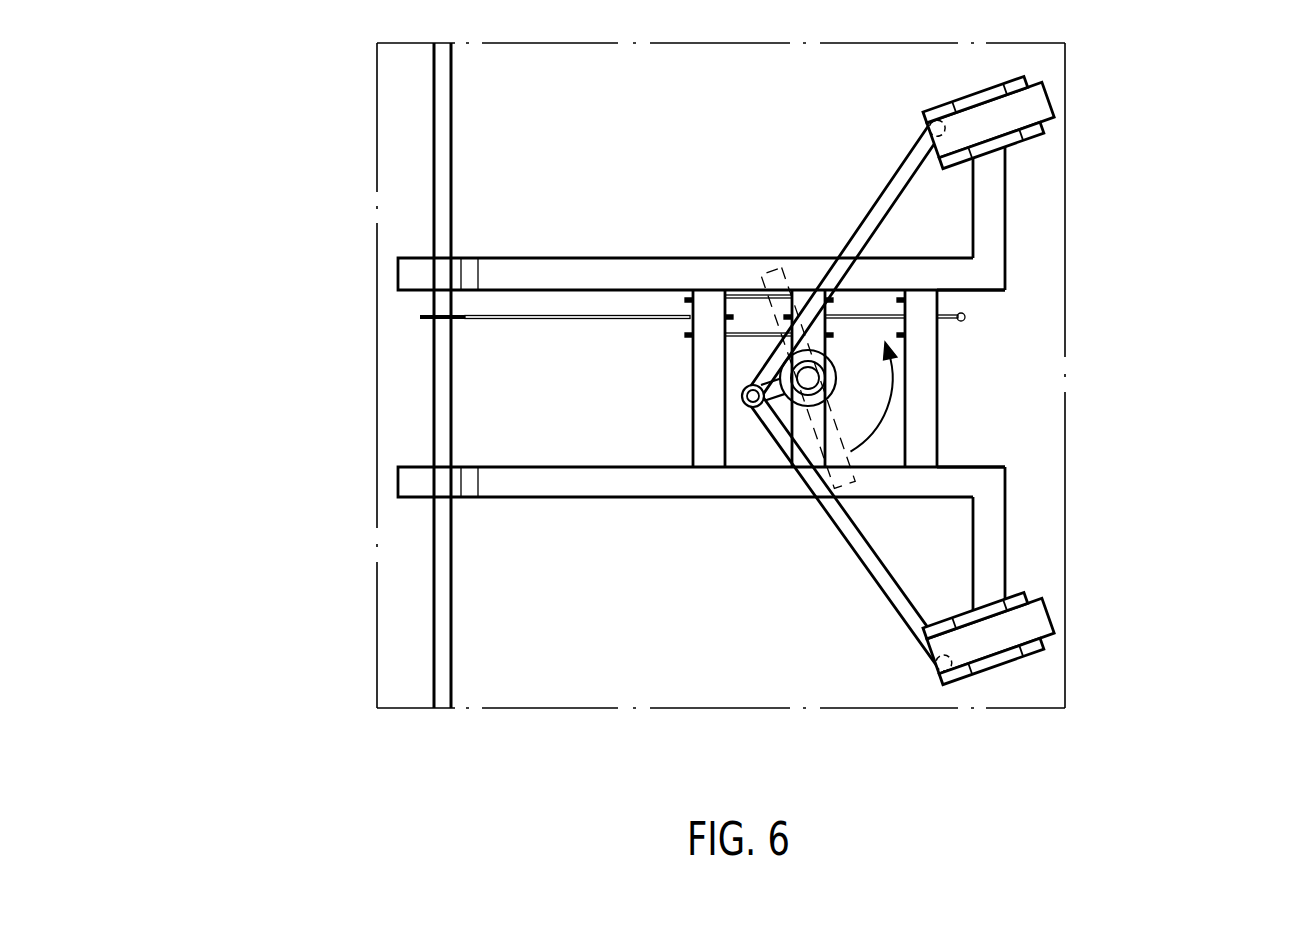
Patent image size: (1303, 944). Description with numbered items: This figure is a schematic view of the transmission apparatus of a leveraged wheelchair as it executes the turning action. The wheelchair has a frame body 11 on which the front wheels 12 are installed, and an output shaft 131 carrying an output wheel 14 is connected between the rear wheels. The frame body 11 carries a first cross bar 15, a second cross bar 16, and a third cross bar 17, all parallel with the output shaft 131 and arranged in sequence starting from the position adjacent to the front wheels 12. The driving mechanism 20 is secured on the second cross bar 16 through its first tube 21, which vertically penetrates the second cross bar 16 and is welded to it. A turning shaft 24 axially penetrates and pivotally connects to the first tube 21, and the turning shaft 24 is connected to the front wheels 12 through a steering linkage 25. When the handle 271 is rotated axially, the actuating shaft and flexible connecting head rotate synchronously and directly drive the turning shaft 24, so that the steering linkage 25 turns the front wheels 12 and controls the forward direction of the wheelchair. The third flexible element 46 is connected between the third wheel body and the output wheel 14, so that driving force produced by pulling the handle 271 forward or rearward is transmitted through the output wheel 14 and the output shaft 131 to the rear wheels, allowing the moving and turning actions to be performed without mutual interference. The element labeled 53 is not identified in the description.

The frame body 11 is at (588, 483).
The front wheel 12 is at (1033, 100).
The output shaft 131 is at (440, 418).
The output wheel 14 is at (430, 318).
The first cross bar 15 is at (934, 357).
The second cross bar 16 is at (827, 428).
The third cross bar 17 is at (693, 405).
The driving mechanism 20 is at (846, 354).
The first tube 21 is at (723, 297).
The turning shaft 24 is at (793, 392).
The steering linkage 25 is at (864, 210).
The handle 271 is at (850, 450).
The third flexible element 46 is at (525, 317).
The stopper 53 is at (966, 317).